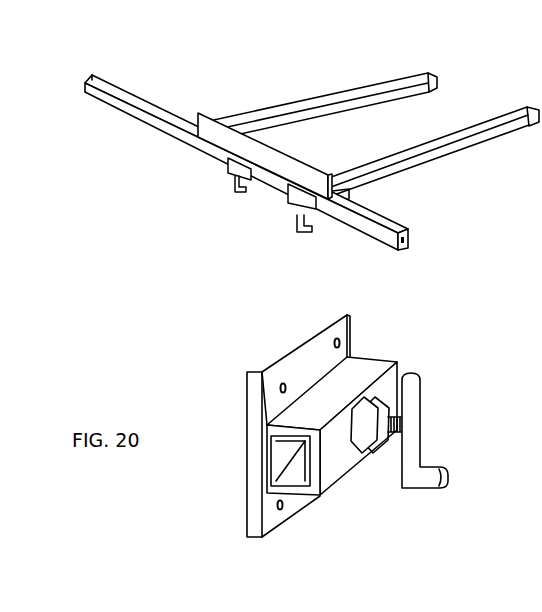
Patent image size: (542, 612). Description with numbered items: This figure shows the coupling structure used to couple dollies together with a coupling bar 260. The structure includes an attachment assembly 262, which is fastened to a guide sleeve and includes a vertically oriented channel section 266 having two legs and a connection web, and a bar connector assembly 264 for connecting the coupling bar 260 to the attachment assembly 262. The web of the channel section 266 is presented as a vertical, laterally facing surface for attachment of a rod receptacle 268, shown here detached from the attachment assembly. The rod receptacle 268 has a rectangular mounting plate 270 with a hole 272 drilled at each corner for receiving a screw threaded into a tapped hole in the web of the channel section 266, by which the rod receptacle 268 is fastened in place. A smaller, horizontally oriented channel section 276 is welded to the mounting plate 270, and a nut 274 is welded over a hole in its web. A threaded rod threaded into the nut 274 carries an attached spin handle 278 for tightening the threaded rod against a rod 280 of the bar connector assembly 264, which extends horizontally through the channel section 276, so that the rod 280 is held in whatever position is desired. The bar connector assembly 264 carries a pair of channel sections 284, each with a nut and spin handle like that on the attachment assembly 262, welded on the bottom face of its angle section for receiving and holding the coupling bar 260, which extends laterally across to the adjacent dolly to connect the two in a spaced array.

The coupling bar 260 is at (133, 98).
The attachment assembly 262 is at (457, 78).
The bar connector assembly 264 is at (345, 72).
The channel section 266 is at (541, 300).
The rod receptacle 268 is at (366, 491).
The mounting plate 270 is at (298, 345).
The hole 272 is at (338, 337).
The nut 274 is at (355, 450).
The channel section 276 is at (358, 368).
The spin handle 278 is at (420, 402).
The rod 280 is at (313, 113).
The channel sections 284 is at (300, 198).